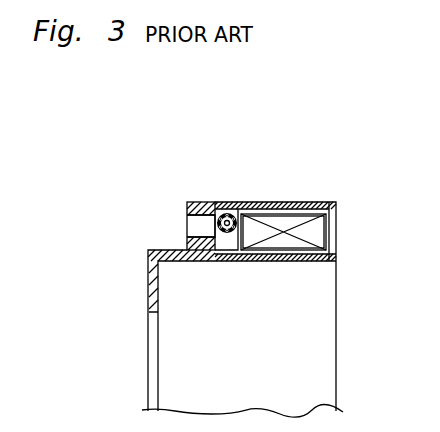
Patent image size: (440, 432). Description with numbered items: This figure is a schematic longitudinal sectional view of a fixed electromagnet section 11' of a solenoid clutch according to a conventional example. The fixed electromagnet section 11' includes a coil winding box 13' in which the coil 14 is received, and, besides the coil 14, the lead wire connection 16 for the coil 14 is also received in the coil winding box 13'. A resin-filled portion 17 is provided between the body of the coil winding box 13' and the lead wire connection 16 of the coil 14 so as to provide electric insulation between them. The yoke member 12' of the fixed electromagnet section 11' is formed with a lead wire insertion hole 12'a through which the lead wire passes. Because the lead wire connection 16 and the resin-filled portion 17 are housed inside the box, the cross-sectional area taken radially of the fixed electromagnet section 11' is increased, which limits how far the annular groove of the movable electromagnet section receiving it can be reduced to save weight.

The fixed electromagnet section 11' is at (207, 246).
The yoke member 12' is at (147, 195).
The lead wire insertion hole 12'a is at (147, 241).
The coil winding box 13' is at (269, 266).
The coil 14 is at (303, 221).
The lead wire connection 16 is at (235, 212).
The resin-filled portion 17 is at (227, 249).